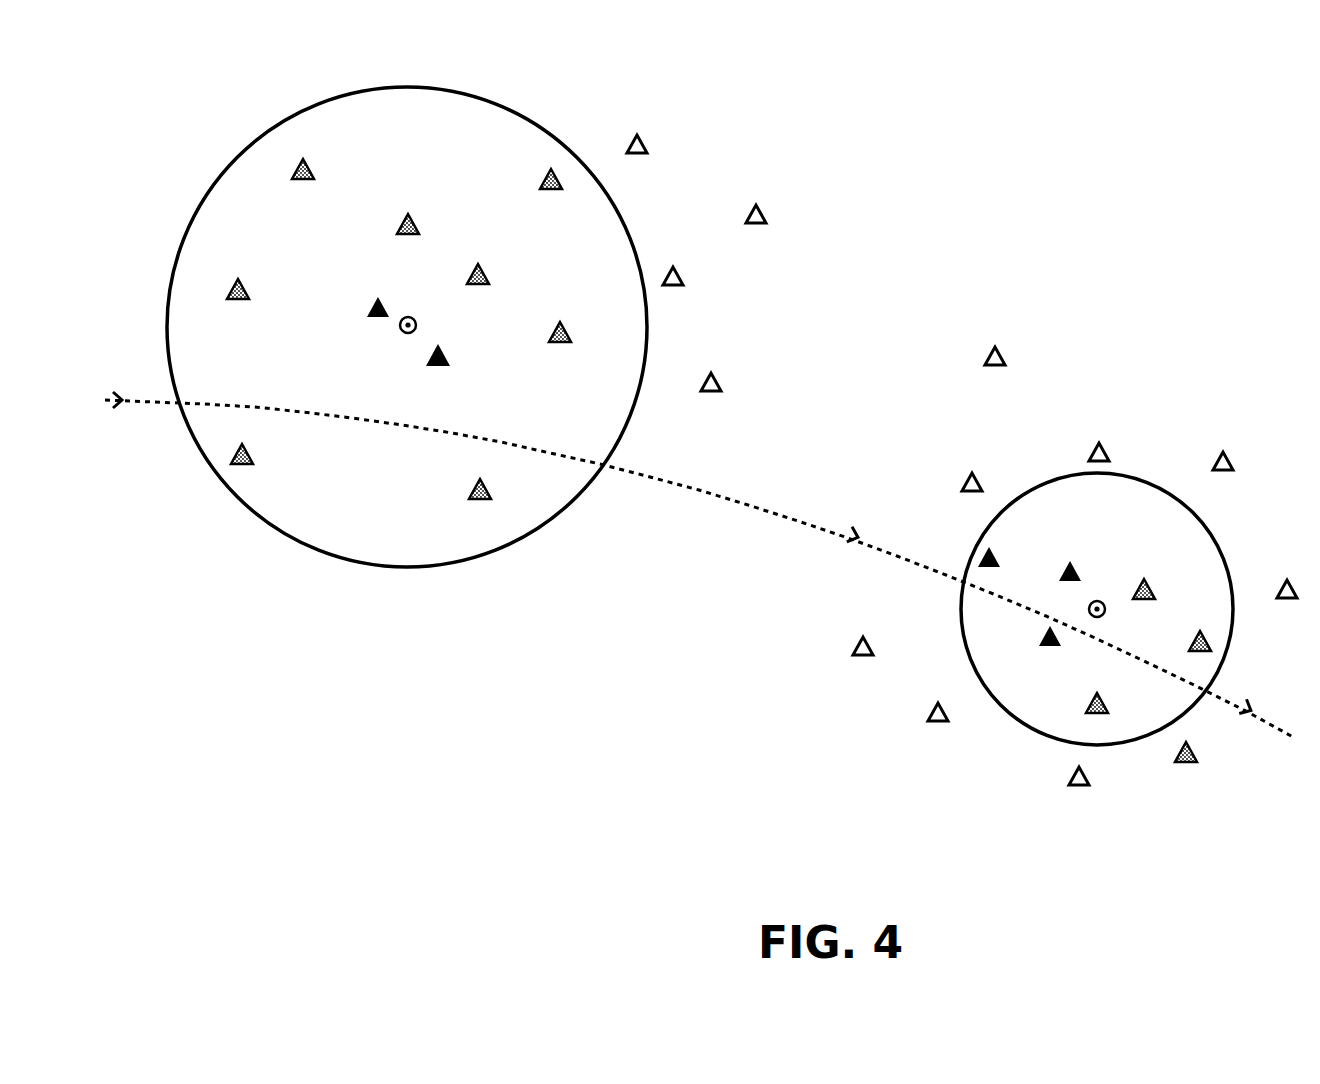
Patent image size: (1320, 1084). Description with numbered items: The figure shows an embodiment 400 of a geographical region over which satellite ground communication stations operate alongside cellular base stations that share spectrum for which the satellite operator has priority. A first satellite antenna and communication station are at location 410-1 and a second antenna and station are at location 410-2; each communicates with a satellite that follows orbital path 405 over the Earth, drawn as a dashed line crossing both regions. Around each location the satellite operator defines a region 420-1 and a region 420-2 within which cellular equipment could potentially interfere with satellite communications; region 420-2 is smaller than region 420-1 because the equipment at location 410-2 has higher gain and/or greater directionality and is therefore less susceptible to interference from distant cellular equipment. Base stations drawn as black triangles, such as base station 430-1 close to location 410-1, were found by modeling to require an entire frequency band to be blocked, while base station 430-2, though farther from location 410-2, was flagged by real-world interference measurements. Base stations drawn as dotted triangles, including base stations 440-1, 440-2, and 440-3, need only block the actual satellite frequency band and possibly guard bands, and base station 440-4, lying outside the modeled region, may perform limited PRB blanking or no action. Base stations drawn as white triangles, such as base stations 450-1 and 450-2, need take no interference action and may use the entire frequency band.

The embodiment of geographical region 400 is at (201, 98).
The orbital path 405 is at (768, 503).
The location of satellite antenna and satellite communication station 410-1 is at (408, 316).
The location of second satellite antenna and second satellite communication station 410-2 is at (1097, 600).
The region 420-1 is at (210, 190).
The region 420-2 is at (1045, 481).
The base station 430-1 is at (445, 346).
The base station 430-2 is at (985, 548).
The base station 440-1 is at (415, 219).
The base station 440-2 is at (486, 268).
The base station 440-3 is at (1098, 694).
The base station 440-4 is at (1188, 765).
The base station 450-1 is at (641, 136).
The base station 450-2 is at (1002, 353).